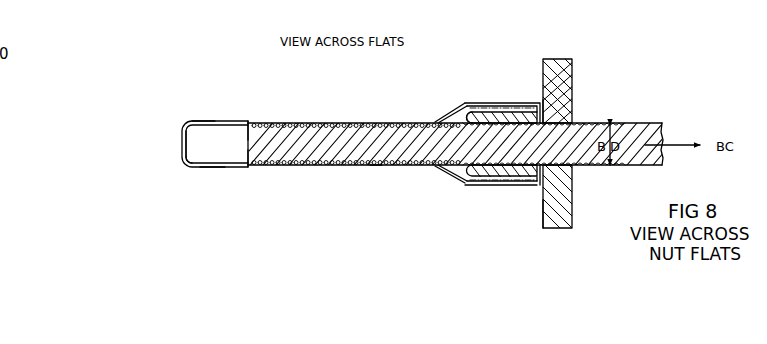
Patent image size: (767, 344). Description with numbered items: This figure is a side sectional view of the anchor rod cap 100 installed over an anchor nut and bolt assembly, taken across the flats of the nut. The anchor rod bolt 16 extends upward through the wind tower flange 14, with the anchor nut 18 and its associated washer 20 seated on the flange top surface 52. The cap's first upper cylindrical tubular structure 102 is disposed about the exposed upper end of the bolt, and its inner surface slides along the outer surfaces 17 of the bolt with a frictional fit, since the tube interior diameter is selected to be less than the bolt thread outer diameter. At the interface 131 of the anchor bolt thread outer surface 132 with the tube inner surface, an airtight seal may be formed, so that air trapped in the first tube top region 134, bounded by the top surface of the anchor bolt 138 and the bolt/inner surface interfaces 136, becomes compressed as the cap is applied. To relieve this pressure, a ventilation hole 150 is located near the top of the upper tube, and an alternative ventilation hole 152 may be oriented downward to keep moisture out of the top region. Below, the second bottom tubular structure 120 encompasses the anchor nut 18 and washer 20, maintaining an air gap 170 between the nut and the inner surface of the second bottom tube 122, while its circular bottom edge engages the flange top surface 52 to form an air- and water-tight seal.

The anchor rod bolt 16 is at (407, 148).
The interface 131 is at (377, 165).
The outer surfaces 17 is at (452, 170).
The air gap 170 is at (475, 183).
The anchor bolt thread outer surface 132 is at (455, 122).
The inner surface of the second bottom tube 122 is at (490, 103).
The anchor nut 18 is at (477, 112).
The second bottom tubular structure 120 is at (497, 187).
The wind tower flange 14 is at (565, 110).
The washer 20 is at (545, 108).
The flange top surface 52 is at (542, 212).
The anchor rod cap 100 is at (165, 137).
The first tube top region 134 is at (197, 150).
The ventilation hole 150 is at (195, 121).
The alternative ventilation hole 152 is at (192, 168).
The first upper cylindrical tubular structure 102 is at (210, 167).
The bolt/inner surface interfaces 136 is at (247, 167).
The top surface of the anchor bolt 138 is at (244, 134).